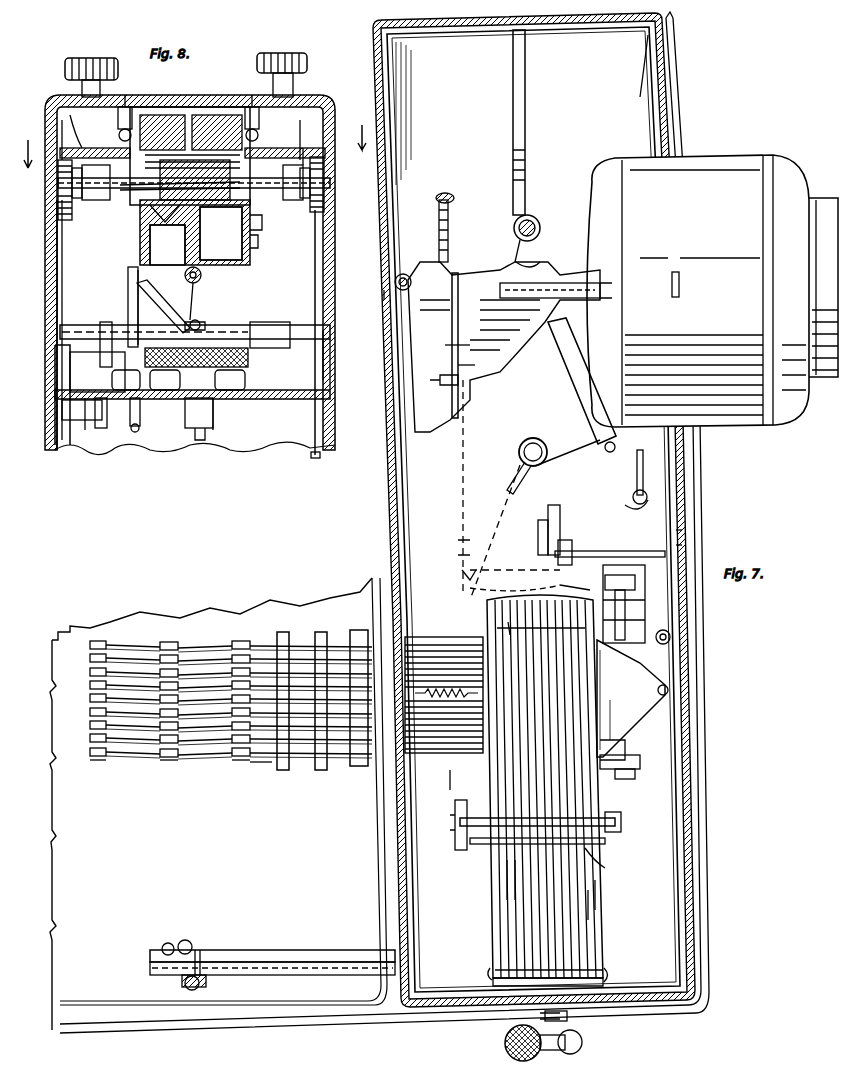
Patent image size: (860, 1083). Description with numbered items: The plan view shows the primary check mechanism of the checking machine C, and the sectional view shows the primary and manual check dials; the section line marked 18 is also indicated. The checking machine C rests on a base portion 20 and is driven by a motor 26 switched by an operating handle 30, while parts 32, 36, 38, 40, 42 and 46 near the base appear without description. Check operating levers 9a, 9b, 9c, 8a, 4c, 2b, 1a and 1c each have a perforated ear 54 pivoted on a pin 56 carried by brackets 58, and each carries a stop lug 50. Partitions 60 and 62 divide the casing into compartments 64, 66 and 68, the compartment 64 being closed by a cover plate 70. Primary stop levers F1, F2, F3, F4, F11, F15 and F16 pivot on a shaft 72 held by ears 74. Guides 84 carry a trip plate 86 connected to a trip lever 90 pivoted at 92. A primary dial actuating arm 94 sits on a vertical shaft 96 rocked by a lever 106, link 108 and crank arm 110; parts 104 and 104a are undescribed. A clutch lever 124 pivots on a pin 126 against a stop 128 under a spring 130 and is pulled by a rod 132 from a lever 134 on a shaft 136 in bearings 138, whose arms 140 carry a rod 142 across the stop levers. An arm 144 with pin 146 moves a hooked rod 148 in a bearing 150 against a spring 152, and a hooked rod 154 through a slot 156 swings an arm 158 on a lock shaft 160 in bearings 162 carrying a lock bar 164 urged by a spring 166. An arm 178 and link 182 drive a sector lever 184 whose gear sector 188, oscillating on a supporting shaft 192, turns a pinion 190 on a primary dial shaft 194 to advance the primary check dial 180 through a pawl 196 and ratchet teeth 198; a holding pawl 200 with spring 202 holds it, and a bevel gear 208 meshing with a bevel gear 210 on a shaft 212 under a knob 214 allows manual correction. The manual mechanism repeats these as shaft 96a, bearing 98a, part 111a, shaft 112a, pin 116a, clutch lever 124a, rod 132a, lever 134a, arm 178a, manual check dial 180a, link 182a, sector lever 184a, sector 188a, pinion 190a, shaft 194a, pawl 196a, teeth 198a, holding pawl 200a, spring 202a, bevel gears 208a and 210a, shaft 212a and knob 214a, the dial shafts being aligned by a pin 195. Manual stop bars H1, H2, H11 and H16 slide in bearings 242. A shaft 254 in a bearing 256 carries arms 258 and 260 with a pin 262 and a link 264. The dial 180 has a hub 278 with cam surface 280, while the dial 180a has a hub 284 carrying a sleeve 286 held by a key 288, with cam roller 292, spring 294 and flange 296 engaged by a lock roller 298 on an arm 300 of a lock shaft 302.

In FIG. 7, the check operating lever 1a is at (96, 758).
In FIG. 7, the check operating lever 1c is at (248, 752).
In FIG. 7, the check operating lever 2b is at (168, 740).
In FIG. 7, the check operating lever 4c is at (240, 708).
In FIG. 7, the check operating lever 8a is at (90, 660).
In FIG. 7, the check operating lever 9a is at (112, 634).
In FIG. 7, the check operating lever 9b is at (190, 639).
In FIG. 7, the check operating lever 9c is at (245, 641).
In FIG. 8, the section line 18 is at (194, 140).
In FIG. 7, the base portion 20 is at (714, 498).
In FIG. 7, the motor 26 is at (712, 291).
In FIG. 7, the operating handle 30 is at (516, 1060).
In FIG. 7, the bracket 32 is at (570, 1022).
In FIG. 7, the rail 36 is at (290, 952).
In FIG. 7, the bar 38 is at (205, 968).
In FIG. 7, the screw 40 is at (200, 988).
In FIG. 7, the washer 42 is at (205, 952).
In FIG. 7, the nut 46 is at (188, 987).
In FIG. 7, the stop lug 50 is at (624, 604).
In FIG. 7, the perforated ear 54 is at (340, 765).
In FIG. 7, the pin 56 is at (316, 780).
In FIG. 7, the bracket 58 is at (308, 633).
In FIG. 7, the partition 60 is at (727, 897).
In FIG. 8, the partition 62 is at (300, 395).
In FIG. 7, the compartment 64 is at (560, 326).
In FIG. 8, the compartment 66 is at (270, 455).
In FIG. 7, the compartment 66 is at (640, 97).
In FIG. 7, the compartment 68 is at (384, 294).
In FIG. 7, the cover plate 70 is at (445, 345).
In FIG. 7, the shaft 72 is at (606, 980).
In FIG. 7, the ear 74 is at (492, 970).
In FIG. 7, the guide 84 is at (441, 783).
In FIG. 7, the trip plate 86 is at (631, 698).
In FIG. 7, the trip lever 90 is at (668, 652).
In FIG. 7, the pivot 92 is at (670, 634).
In FIG. 7, the primary dial actuating arm 94 is at (462, 548).
In FIG. 7, the vertical shaft 96 is at (538, 438).
In FIG. 8, the vertical shaft 96a is at (215, 428).
In FIG. 8, the bearing 98a is at (185, 420).
In FIG. 7, the arm 104 is at (553, 471).
In FIG. 8, the arm 104a is at (215, 320).
In FIG. 7, the lever 106 is at (596, 442).
In FIG. 7, the link 108 is at (588, 360).
In FIG. 7, the crank arm 110 is at (538, 243).
In FIG. 7, the divider bar 111a is at (530, 205).
In FIG. 7, the shaft 112a is at (541, 229).
In FIG. 7, the spring pressed pin 116a is at (536, 262).
In FIG. 7, the clutch lever 124 is at (475, 262).
In FIG. 7, the clutch lever 124a is at (505, 298).
In FIG. 7, the pin 126 is at (407, 290).
In FIG. 7, the stop 128 is at (450, 240).
In FIG. 7, the spring 130 is at (455, 197).
In FIG. 7, the rod 132 is at (458, 350).
In FIG. 7, the rod 132a is at (475, 365).
In FIG. 7, the lever 134 is at (458, 845).
In FIG. 7, the lever 134a is at (448, 388).
In FIG. 7, the shaft 136 is at (575, 818).
In FIG. 7, the bearing 138 is at (621, 828).
In FIG. 7, the arm 140 is at (482, 846).
In FIG. 7, the rod 142 is at (605, 868).
In FIG. 7, the arm 144 is at (567, 530).
In FIG. 7, the pin 146 is at (538, 548).
In FIG. 7, the hooked rod 148 is at (600, 551).
In FIG. 7, the bearing 150 is at (576, 549).
In FIG. 7, the spring 152 is at (440, 700).
In FIG. 7, the hooked rod 154 is at (515, 585).
In FIG. 7, the slot 156 is at (460, 572).
In FIG. 7, the arm 158 is at (682, 545).
In FIG. 7, the lock shaft 160 is at (626, 605).
In FIG. 7, the bearing 162 is at (640, 762).
In FIG. 7, the lock bar 164 is at (625, 735).
In FIG. 7, the spring 166 is at (676, 532).
In FIG. 7, the arm 178 is at (635, 480).
In FIG. 8, the arm 178a is at (173, 306).
In FIG. 8, the primary check dial 180 is at (240, 248).
In FIG. 8, the manual check dial 180a is at (178, 301).
In FIG. 8, the link 182 is at (316, 458).
In FIG. 7, the link 182 is at (635, 508).
In FIG. 8, the link 182a is at (128, 282).
In FIG. 8, the sector lever 184 is at (335, 351).
In FIG. 8, the sector lever 184a is at (138, 301).
In FIG. 8, the toothed gear sector 188 is at (318, 254).
In FIG. 8, the gear sector 188a is at (57, 248).
In FIG. 8, the pinion 190 is at (324, 200).
In FIG. 8, the pinion 190a is at (62, 200).
In FIG. 8, the supporting shaft 192 is at (255, 322).
In FIG. 8, the primary dial shaft 194 is at (310, 180).
In FIG. 8, the manual dial shaft 194a is at (78, 196).
In FIG. 8, the pin 195 is at (194, 185).
In FIG. 8, the pawl 196 is at (284, 179).
In FIG. 8, the pawl 196a is at (99, 203).
In FIG. 8, the ratchet teeth 198 is at (285, 142).
In FIG. 8, the ratchet teeth 198a is at (95, 160).
In FIG. 8, the holding pawl 200 is at (252, 95).
In FIG. 8, the holding pawl 200a is at (127, 95).
In FIG. 8, the spring 202 is at (258, 130).
In FIG. 8, the spring 202a is at (124, 110).
In FIG. 8, the bevel gear 208 is at (260, 240).
In FIG. 8, the bevel gear 208a is at (62, 265).
In FIG. 8, the bevel gear 210 is at (323, 122).
In FIG. 8, the bevel gear 210a is at (62, 125).
In FIG. 8, the shaft 212 is at (320, 158).
In FIG. 8, the shaft 212a is at (72, 115).
In FIG. 8, the manually operable knob 214 is at (307, 60).
In FIG. 8, the knob 214a is at (68, 62).
In FIG. 8, the bearing 242 is at (256, 384).
In FIG. 8, the shaft 254 is at (102, 428).
In FIG. 8, the bearing 256 is at (62, 408).
In FIG. 8, the arm 258 is at (102, 372).
In FIG. 8, the arm 260 is at (88, 430).
In FIG. 8, the pin 262 is at (108, 340).
In FIG. 8, the link 264 is at (140, 406).
In FIG. 8, the hub 278 is at (262, 218).
In FIG. 8, the cam surface 280 is at (221, 233).
In FIG. 8, the hub 284 is at (165, 200).
In FIG. 8, the sleeve 286 is at (165, 115).
In FIG. 8, the key 288 is at (140, 192).
In FIG. 8, the cam roller 292 is at (217, 132).
In FIG. 8, the spring 294 is at (160, 155).
In FIG. 8, the flange 296 is at (167, 245).
In FIG. 8, the lock roller 298 is at (162, 222).
In FIG. 8, the arm 300 is at (202, 278).
In FIG. 8, the lock shaft 302 is at (216, 312).
In FIG. 8, the checking machine C is at (62, 332).
In FIG. 7, the checking machine C is at (733, 760).
In FIG. 7, the primary stop lever F1 is at (534, 786).
In FIG. 7, the primary stop lever F2 is at (490, 788).
In FIG. 7, the primary stop lever F3 is at (507, 897).
In FIG. 7, the primary stop lever F4 is at (515, 912).
In FIG. 7, the primary stop lever F11 is at (575, 582).
In FIG. 7, the primary stop lever F15 is at (590, 920).
In FIG. 7, the primary stop lever F16 is at (597, 904).
In FIG. 8, the manual stop bar H1 is at (126, 380).
In FIG. 8, the manual stop bar H2 is at (165, 380).
In FIG. 8, the manual stop bar H11 is at (230, 380).
In FIG. 8, the manual stop bar H16 is at (249, 354).